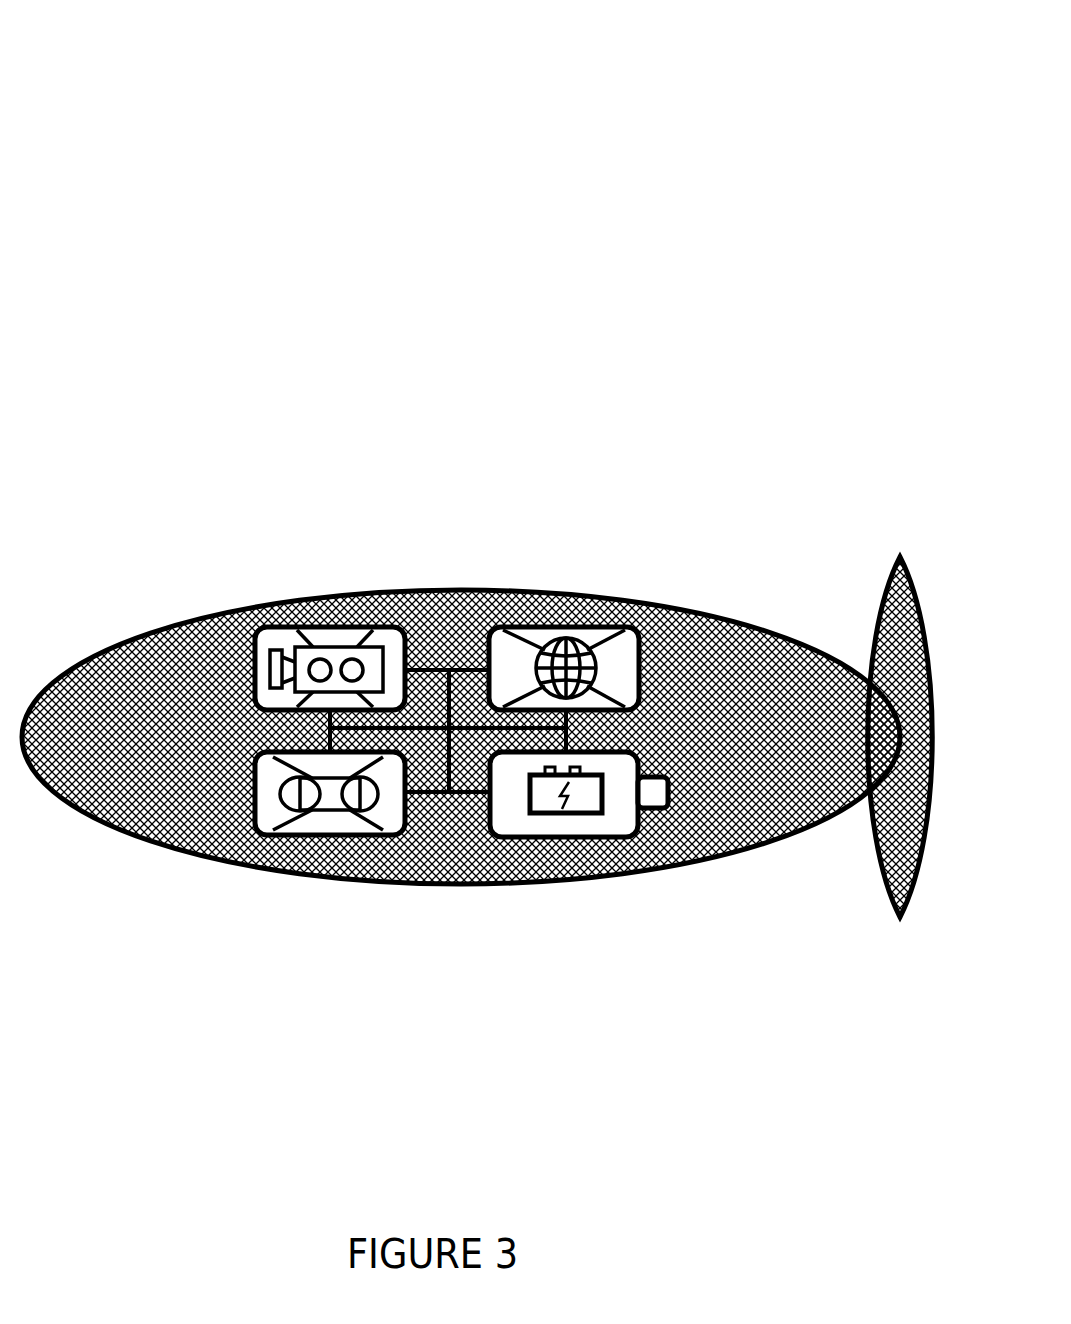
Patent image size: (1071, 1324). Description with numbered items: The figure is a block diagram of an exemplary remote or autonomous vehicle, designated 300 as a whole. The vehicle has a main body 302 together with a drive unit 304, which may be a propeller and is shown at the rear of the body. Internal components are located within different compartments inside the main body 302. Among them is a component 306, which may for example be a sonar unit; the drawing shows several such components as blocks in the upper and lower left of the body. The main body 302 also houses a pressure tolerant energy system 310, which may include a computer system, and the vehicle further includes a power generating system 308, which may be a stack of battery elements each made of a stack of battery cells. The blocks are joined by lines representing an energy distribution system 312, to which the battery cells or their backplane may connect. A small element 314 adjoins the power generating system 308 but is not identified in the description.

The aerial vehicle 300 is at (118, 62).
The main body 302 is at (697, 560).
The drive unit 304 is at (118, 775).
The component 306 is at (555, 608).
The power generating system 308 is at (512, 835).
The pressure tolerant energy system 310 is at (583, 813).
The energy distribution system 312 is at (433, 805).
The port 314 is at (665, 813).